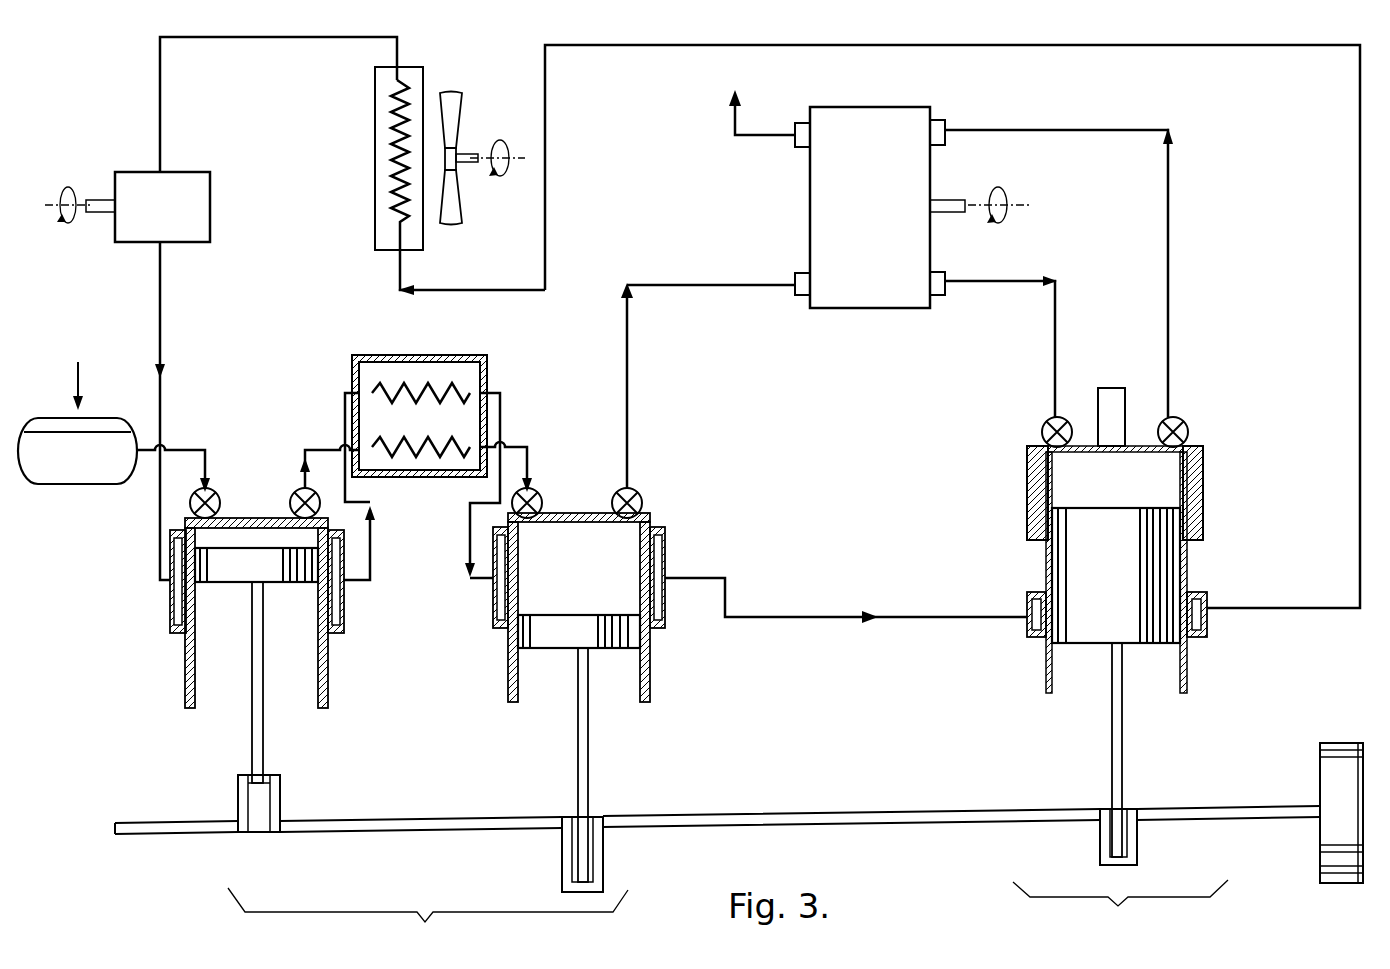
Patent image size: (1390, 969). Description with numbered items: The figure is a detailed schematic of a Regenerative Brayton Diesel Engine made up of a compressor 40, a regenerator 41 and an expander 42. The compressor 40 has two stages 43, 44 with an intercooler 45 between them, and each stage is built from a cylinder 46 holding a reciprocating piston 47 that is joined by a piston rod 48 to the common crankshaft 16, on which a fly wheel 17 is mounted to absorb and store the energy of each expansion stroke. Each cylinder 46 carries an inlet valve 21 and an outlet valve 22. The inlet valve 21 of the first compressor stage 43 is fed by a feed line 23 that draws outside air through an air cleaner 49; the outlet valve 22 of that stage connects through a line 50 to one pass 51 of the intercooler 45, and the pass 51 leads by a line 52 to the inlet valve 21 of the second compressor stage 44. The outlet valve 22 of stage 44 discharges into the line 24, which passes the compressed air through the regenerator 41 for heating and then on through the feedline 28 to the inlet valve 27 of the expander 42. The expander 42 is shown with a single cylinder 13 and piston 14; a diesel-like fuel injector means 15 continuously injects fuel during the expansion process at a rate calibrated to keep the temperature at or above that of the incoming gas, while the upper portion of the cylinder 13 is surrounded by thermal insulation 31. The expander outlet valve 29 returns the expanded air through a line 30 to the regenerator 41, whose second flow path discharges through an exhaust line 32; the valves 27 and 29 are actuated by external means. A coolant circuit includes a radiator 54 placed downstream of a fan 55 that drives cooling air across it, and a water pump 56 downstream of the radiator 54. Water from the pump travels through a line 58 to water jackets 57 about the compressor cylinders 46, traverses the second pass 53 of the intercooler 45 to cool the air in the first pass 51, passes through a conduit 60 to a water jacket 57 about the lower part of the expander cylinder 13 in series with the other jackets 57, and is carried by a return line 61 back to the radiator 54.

The cylinder 13 is at (1192, 559).
The piston 14 is at (1082, 566).
The fuel injector means 15 is at (1111, 382).
The crankshaft 16 is at (849, 819).
The fly wheel 17 is at (1349, 742).
The inlet valve 21 is at (214, 490).
The outlet valve 22 is at (293, 490).
The feed line 23 is at (150, 458).
The line 24 is at (628, 418).
The inlet valve 27 is at (1043, 428).
The feedline 28 is at (1058, 287).
The outlet valve 29 is at (1190, 424).
The line 30 is at (1170, 157).
The thermal insulation 31 is at (1027, 508).
The exhaust line 32 is at (735, 116).
The compressor 40 is at (410, 741).
The regenerator 41 is at (870, 310).
The expander 42 is at (686, 704).
The first compressor stage 43 is at (404, 697).
The second compressor stage 44 is at (668, 678).
The intercooler 45 is at (423, 416).
The cylinder 46 is at (330, 677).
The reciprocating piston 47 is at (227, 580).
The piston rod 48 is at (265, 738).
The air cleaner 49 is at (26, 482).
The line 50 is at (311, 446).
The pass 51 is at (423, 460).
The line 52 is at (528, 447).
The second pass 53 is at (381, 386).
The radiator 54 is at (375, 105).
The fan 55 is at (456, 96).
The water pump 56 is at (233, 143).
The water jacket 57 is at (1031, 640).
The line 58 is at (163, 322).
The conduit 60 is at (870, 620).
The return line 61 is at (1268, 610).